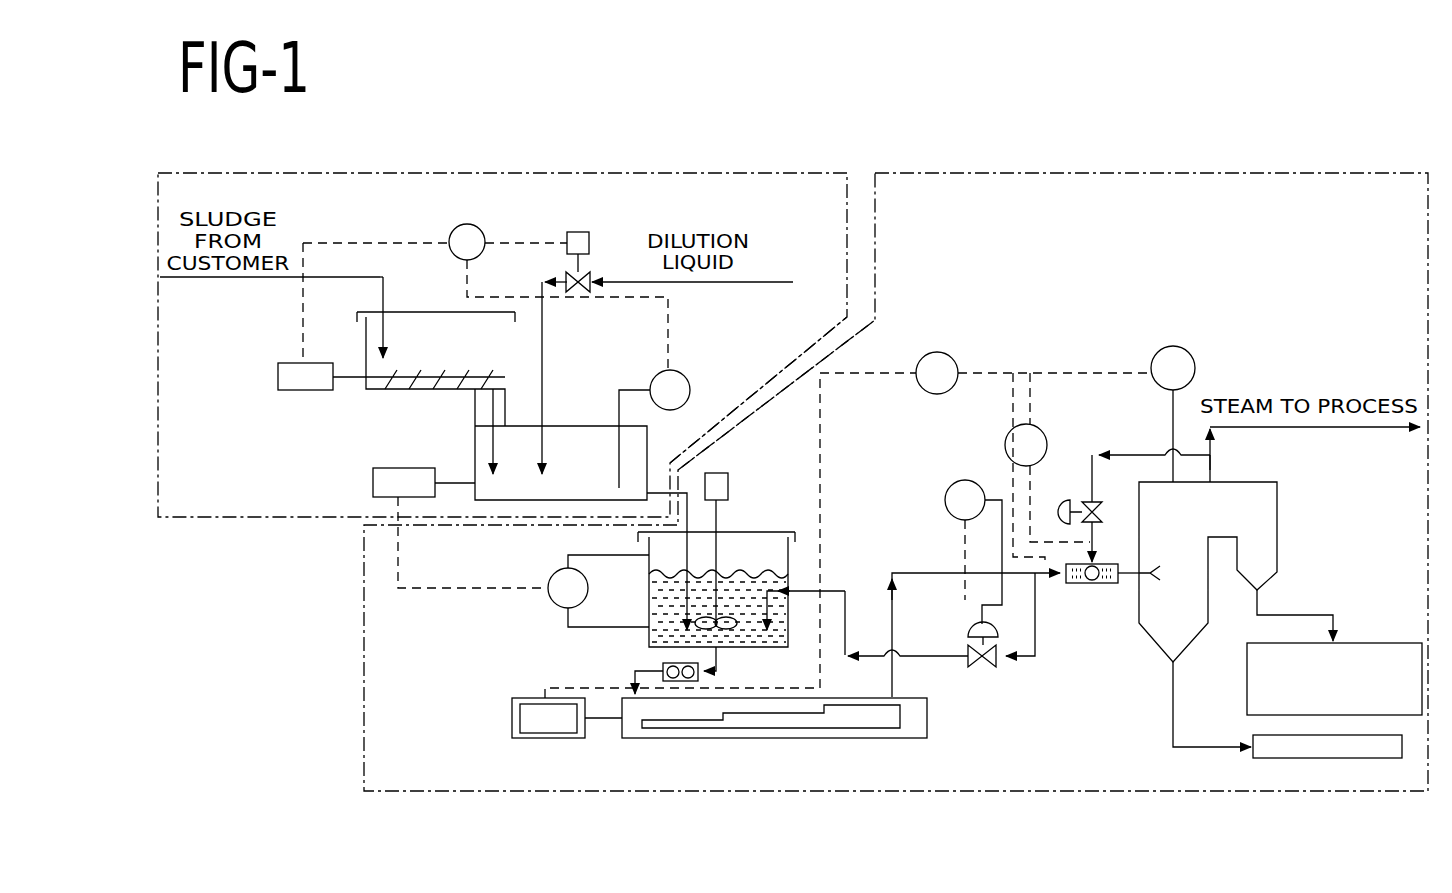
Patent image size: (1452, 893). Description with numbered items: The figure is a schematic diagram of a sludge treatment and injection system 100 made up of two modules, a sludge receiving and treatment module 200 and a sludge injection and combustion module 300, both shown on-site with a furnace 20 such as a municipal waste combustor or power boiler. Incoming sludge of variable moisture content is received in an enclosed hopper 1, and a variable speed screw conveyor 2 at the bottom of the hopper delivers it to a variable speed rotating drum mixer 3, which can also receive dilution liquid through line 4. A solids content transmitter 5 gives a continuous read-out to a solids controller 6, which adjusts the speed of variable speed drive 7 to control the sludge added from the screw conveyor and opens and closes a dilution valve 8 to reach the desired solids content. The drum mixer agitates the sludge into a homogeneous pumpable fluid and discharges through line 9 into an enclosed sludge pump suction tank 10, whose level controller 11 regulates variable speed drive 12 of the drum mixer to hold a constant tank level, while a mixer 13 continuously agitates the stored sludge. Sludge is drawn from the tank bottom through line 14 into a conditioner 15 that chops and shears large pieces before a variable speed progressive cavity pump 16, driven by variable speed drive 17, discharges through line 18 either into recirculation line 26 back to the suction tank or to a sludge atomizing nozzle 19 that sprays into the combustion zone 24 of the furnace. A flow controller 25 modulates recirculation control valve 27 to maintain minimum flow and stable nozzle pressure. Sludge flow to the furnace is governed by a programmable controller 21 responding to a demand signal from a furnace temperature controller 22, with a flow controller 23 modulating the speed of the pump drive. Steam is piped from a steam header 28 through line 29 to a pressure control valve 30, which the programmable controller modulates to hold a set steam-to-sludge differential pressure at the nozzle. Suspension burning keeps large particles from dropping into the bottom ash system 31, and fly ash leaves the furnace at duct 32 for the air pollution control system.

The enclosed hopper 1 is at (366, 352).
The variable speed screw conveyor 2 is at (433, 372).
The variable speed rotating drum mixer 3 is at (572, 426).
The line 4 is at (542, 346).
The solids content transmitter 5 is at (684, 377).
The solids controller 6 is at (480, 229).
The variable speed drive 7 is at (278, 377).
The dilution valve 8 is at (578, 232).
The line 9 is at (657, 492).
The sludge pump suction tank 10 is at (638, 536).
The level controller 11 is at (551, 601).
The variable speed drive 12 is at (373, 483).
The mixer 13 is at (728, 487).
The line 14 is at (718, 658).
The conditioner 15 is at (660, 666).
The variable speed progressive cavity pump 16 is at (702, 739).
The variable speed drive 17 is at (512, 718).
The line 18 is at (892, 676).
The sludge atomizing nozzle 19 is at (1092, 583).
The furnace 20 is at (1277, 518).
The programmable controller 21 is at (1005, 445).
The furnace temperature controller 22 is at (1184, 349).
The flow controller 23 is at (938, 352).
The combustion zone 24 is at (1177, 588).
The flow controller 25 is at (949, 512).
The recirculation line 26 is at (1035, 642).
The recirculation control valve 27 is at (982, 668).
The steam header 28 is at (1295, 428).
The line 29 is at (1137, 453).
The pressure control valve 30 is at (1077, 512).
The bottom ash system 31 is at (1195, 745).
The duct 32 is at (1308, 615).
The sludge treatment and injection system 100 is at (788, 164).
The sludge receiving and treatment module 200 is at (631, 164).
The sludge injection and combustion module 300 is at (1076, 164).